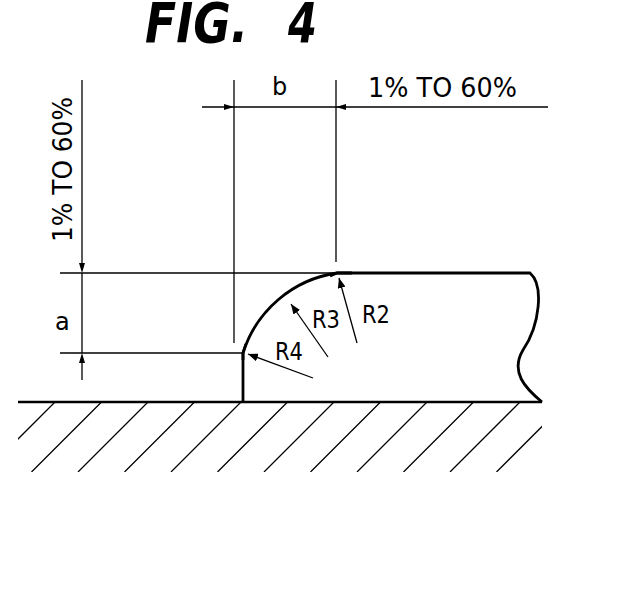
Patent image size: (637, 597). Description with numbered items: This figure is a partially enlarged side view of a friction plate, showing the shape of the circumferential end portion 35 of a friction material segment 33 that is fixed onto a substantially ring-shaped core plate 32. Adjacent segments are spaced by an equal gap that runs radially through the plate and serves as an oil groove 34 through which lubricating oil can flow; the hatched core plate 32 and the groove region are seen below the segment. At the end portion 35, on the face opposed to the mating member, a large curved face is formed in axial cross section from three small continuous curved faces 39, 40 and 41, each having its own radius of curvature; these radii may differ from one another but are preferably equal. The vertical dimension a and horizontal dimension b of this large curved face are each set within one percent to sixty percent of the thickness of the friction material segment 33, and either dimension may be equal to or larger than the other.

The core plate 32 is at (408, 447).
The friction material segment 33 is at (502, 285).
The oil groove 34 is at (162, 390).
The end portion 35 is at (263, 382).
The curved face 39 is at (338, 273).
The curved face 40 is at (288, 300).
The curved face 41 is at (241, 353).